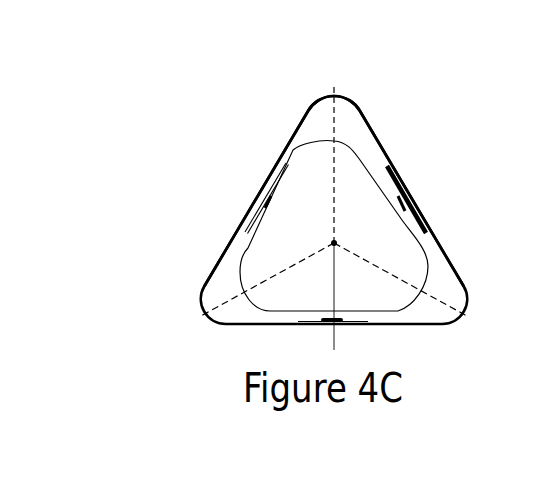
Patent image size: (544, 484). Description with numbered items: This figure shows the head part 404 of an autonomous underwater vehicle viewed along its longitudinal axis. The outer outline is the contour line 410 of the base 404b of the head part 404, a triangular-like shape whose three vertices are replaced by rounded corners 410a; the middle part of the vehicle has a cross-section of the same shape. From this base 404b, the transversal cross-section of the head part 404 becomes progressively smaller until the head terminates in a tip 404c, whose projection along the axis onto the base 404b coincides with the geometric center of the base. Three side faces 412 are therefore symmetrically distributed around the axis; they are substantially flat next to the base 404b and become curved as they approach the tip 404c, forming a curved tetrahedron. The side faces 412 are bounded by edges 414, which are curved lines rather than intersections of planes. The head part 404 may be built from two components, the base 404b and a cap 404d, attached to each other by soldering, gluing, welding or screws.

The head part 404 is at (426, 249).
The base 404b is at (370, 137).
The tip 404c is at (334, 243).
The cap 404d is at (278, 250).
The contour line 410 is at (297, 130).
The rounded corners 410a is at (326, 92).
The side faces 412 is at (282, 167).
The edges 414 is at (335, 178).